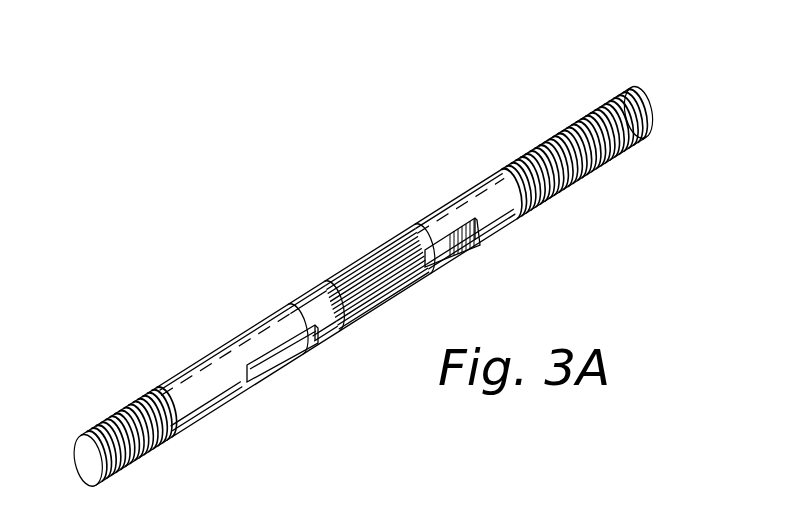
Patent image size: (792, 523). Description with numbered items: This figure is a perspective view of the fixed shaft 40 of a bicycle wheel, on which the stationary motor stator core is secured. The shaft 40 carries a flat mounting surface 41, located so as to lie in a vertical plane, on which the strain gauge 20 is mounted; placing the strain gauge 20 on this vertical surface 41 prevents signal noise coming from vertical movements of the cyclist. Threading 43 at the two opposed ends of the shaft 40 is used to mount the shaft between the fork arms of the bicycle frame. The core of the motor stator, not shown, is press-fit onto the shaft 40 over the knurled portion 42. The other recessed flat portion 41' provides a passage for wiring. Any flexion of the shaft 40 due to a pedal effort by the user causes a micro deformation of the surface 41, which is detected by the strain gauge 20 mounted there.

The shaft 40 is at (355, 226).
The flat mounting surface 41 is at (290, 302).
The recessed flat portion 41' is at (508, 257).
The knurled portion 42 is at (375, 318).
The threading 43 is at (150, 445).
The strain gauge 20 is at (279, 357).